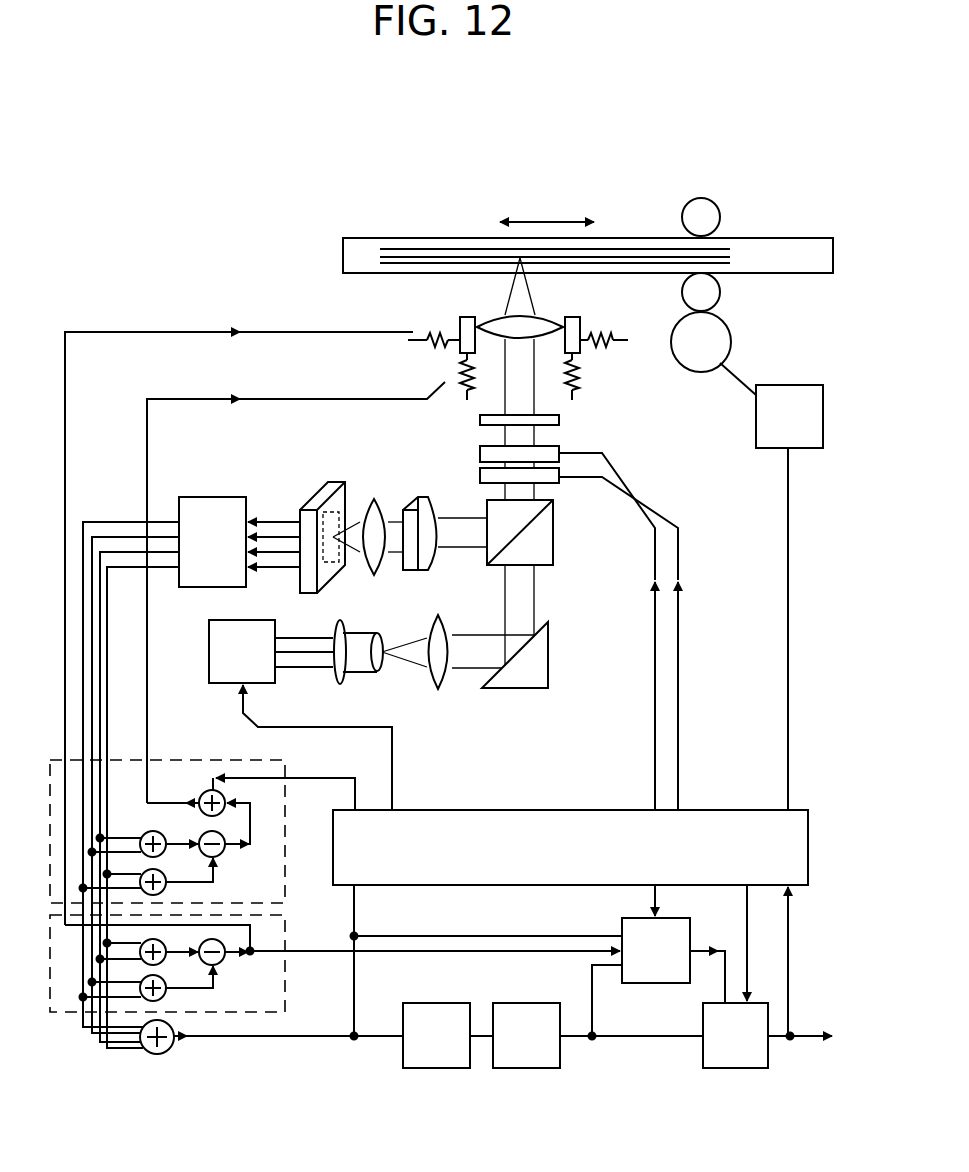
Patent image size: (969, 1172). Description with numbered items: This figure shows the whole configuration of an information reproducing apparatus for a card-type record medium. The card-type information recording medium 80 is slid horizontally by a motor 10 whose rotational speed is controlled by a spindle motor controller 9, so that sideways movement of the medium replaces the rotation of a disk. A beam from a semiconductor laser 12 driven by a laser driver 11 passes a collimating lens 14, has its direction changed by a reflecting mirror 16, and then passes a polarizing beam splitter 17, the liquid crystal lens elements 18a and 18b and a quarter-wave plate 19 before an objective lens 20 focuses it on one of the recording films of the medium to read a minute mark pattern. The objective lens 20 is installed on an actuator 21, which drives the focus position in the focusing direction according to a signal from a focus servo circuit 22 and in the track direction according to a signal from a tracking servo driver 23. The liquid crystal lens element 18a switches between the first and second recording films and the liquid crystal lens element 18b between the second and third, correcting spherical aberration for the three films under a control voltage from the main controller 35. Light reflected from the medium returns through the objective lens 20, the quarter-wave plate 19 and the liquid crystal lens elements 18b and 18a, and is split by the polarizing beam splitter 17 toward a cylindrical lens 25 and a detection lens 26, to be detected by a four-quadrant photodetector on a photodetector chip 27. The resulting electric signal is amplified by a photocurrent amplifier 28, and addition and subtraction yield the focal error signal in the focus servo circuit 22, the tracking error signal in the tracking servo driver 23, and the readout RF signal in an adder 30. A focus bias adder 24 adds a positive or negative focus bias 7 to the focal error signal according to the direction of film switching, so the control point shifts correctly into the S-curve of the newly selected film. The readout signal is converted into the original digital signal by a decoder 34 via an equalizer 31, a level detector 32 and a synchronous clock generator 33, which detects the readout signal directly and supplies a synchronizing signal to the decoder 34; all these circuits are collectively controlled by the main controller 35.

The card-type information recording medium 80 is at (588, 258).
The motor 10 is at (724, 285).
The spindle motor controller 9 is at (771, 586).
The objective lens 20 is at (520, 318).
The actuator 21 is at (521, 366).
The quarter-wave plate 19 is at (542, 433).
The liquid crystal lens element 18b is at (538, 623).
The liquid crystal lens element 18a is at (550, 636).
The polarizing beam splitter 17 is at (542, 539).
The cylindrical lens 25 is at (445, 551).
The detection lens 26 is at (368, 557).
The photodetector chip 27 is at (313, 530).
The photocurrent amplifier 28 is at (191, 772).
The laser driver 11 is at (300, 715).
The semiconductor laser 12 is at (380, 671).
The collimating lens 14 is at (482, 674).
The reflecting mirror 16 is at (537, 662).
The main controller 35 is at (570, 925).
The synchronous clock generator 33 is at (487, 979).
The equalizer 31 is at (436, 1035).
The level detector 32 is at (526, 1035).
The decoder 34 is at (735, 1035).
The focus servo circuit 22 is at (170, 833).
The focus bias adder 24 is at (186, 793).
The focus bias 7 is at (284, 781).
The tracking servo driver 23 is at (167, 964).
The adder 30 is at (177, 1053).